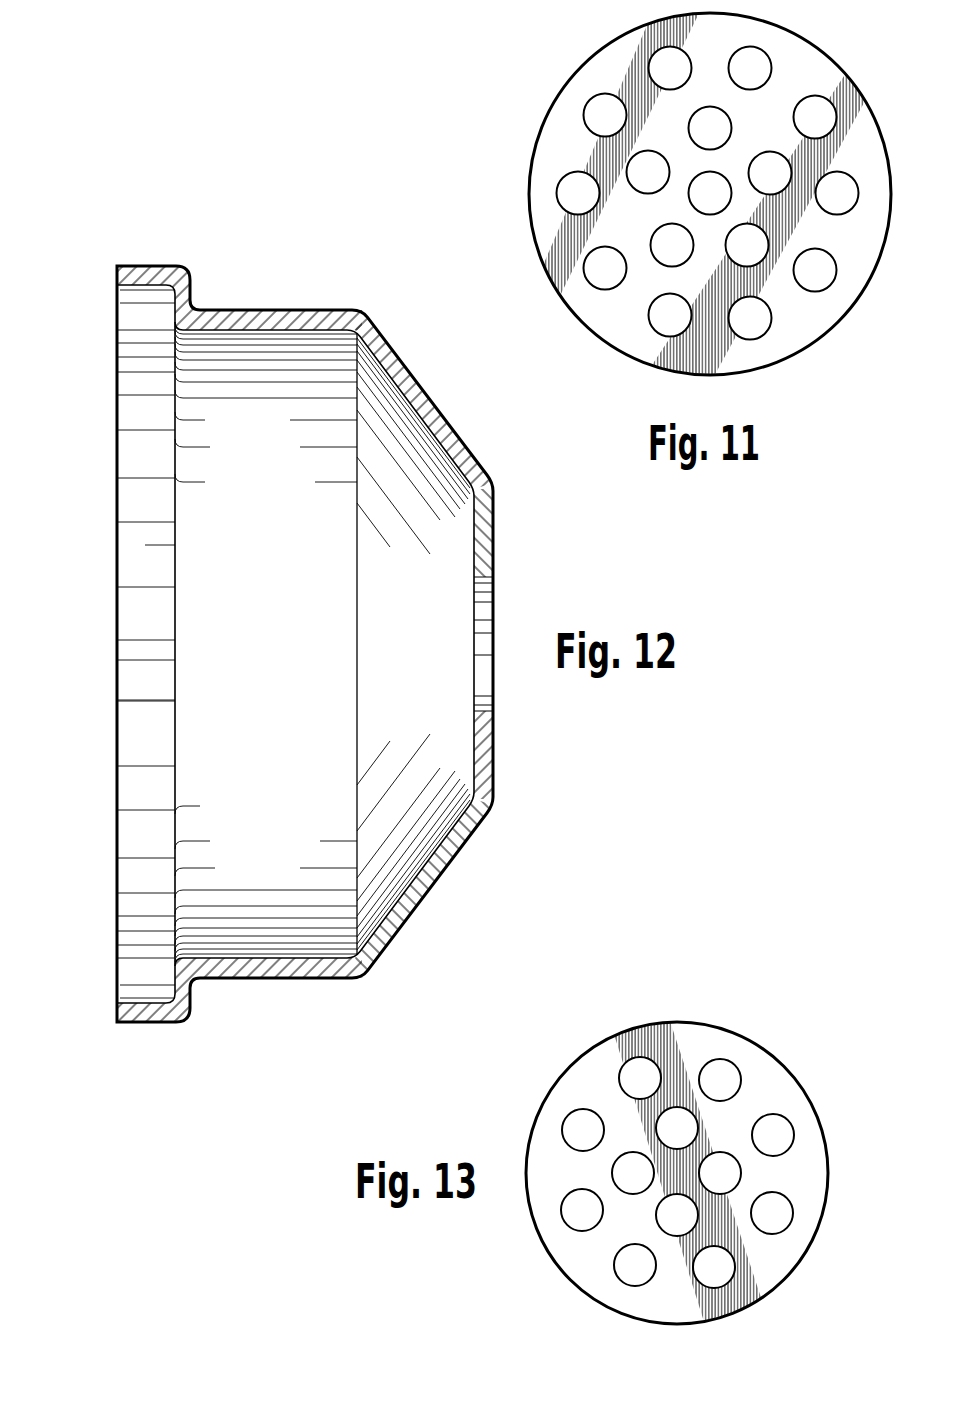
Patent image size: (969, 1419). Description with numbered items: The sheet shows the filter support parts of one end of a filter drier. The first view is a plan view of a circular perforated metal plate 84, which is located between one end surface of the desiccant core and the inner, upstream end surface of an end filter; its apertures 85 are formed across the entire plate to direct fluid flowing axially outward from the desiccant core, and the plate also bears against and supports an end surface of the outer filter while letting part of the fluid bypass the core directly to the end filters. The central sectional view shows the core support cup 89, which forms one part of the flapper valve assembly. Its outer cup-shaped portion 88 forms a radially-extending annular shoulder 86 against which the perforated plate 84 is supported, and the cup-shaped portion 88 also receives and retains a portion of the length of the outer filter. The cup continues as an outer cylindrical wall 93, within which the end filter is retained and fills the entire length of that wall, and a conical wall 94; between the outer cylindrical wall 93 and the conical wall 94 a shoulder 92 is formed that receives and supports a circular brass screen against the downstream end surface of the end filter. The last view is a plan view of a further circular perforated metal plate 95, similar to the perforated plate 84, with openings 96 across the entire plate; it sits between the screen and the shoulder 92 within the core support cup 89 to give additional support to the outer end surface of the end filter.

In FIG. 11, the perforated plate 84 is at (613, 72).
In FIG. 11, the apertures 85 is at (627, 165).
In FIG. 12, the annular shoulder 86 is at (172, 980).
In FIG. 12, the outer cup-shaped portion 88 is at (153, 1020).
In FIG. 12, the core support cup 89 is at (324, 310).
In FIG. 12, the shoulder 92 is at (347, 953).
In FIG. 12, the outer cylindrical wall 93 is at (293, 978).
In FIG. 12, the conical wall 94 is at (424, 895).
In FIG. 13, the further perforated plate 95 is at (590, 1088).
In FIG. 13, the openings 96 is at (698, 1128).